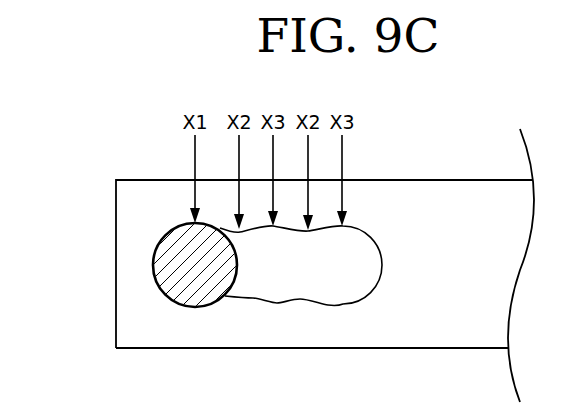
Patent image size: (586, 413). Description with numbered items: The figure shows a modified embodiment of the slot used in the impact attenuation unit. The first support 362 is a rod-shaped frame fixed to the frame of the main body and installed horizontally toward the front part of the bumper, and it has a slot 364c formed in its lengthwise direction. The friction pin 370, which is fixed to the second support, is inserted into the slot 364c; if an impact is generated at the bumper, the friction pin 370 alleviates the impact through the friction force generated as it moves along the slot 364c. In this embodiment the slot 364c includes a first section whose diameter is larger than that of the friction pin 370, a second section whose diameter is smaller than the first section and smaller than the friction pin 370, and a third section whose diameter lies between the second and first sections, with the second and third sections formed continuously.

The friction pin 370 is at (167, 266).
The slot 364c is at (272, 304).
The first support 362 is at (385, 340).